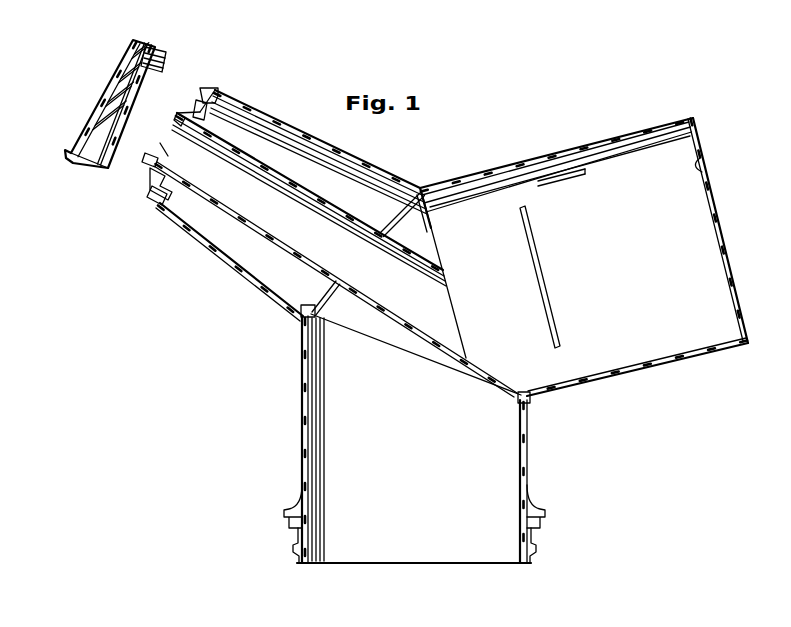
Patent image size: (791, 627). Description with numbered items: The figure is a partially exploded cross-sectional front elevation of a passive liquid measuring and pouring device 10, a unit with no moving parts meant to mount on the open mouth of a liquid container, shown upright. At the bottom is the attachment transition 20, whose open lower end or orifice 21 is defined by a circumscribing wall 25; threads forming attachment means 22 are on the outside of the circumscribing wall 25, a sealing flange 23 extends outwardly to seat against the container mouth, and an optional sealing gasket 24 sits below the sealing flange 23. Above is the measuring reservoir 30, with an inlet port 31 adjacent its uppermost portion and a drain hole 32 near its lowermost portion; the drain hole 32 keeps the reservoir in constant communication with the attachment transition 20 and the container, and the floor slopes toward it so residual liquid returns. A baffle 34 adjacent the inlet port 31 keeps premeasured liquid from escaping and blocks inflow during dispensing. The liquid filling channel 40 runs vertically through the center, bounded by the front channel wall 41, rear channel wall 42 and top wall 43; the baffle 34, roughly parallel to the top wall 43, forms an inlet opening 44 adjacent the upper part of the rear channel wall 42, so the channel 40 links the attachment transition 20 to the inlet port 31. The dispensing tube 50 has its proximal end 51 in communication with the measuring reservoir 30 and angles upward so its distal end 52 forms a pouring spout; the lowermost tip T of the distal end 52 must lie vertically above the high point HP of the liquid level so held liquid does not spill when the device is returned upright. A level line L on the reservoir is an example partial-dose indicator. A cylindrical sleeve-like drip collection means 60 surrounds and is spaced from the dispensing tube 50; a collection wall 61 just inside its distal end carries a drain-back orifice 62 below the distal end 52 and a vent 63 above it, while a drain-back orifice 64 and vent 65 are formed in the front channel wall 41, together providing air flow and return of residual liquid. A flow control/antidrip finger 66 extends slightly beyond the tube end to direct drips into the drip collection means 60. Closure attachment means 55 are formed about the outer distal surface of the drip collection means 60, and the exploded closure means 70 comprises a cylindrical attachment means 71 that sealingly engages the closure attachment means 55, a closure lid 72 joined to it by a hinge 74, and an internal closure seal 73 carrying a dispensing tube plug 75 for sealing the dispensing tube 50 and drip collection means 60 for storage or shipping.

The liquid measuring and pouring device 10 is at (466, 130).
The attachment transition 20 is at (285, 458).
The open lower end or orifice 21 is at (422, 565).
The attachment means 22 is at (299, 549).
The sealing flange 23 is at (542, 523).
The sealing gasket 24 is at (543, 532).
The circumscribing wall 25 is at (299, 535).
The measuring reservoir 30 is at (623, 122).
The inlet port 31 is at (580, 166).
The drain hole 32 is at (527, 393).
The baffle 34 is at (547, 180).
The liquid filling channel 40 is at (430, 462).
The front channel wall 41 is at (324, 326).
The rear channel wall 42 is at (392, 212).
The top wall 43 is at (500, 172).
The inlet opening 44 is at (431, 242).
The dispensing tube 50 is at (253, 222).
The proximal end 51 is at (456, 313).
The distal end 52 is at (175, 126).
The closure attachment means 55 is at (210, 91).
The drip collection means 60 is at (220, 258).
The collection wall 61 is at (151, 177).
The drain-back orifice 62 is at (162, 208).
The vent 63 is at (197, 118).
The drain-back orifice 64 is at (305, 308).
The vent 65 is at (332, 298).
The flow control/antidrip finger 66 is at (146, 161).
The closure means 70 is at (61, 172).
The cylindrical attachment means 71 is at (164, 55).
The closure lid 72 is at (100, 102).
The internal closure seal 73 is at (100, 125).
The hinge 74 is at (161, 50).
The dispensing tube plug 75 is at (120, 78).
The lowermost tip T is at (161, 145).
The level line L is at (550, 300).
The high point HP is at (698, 160).